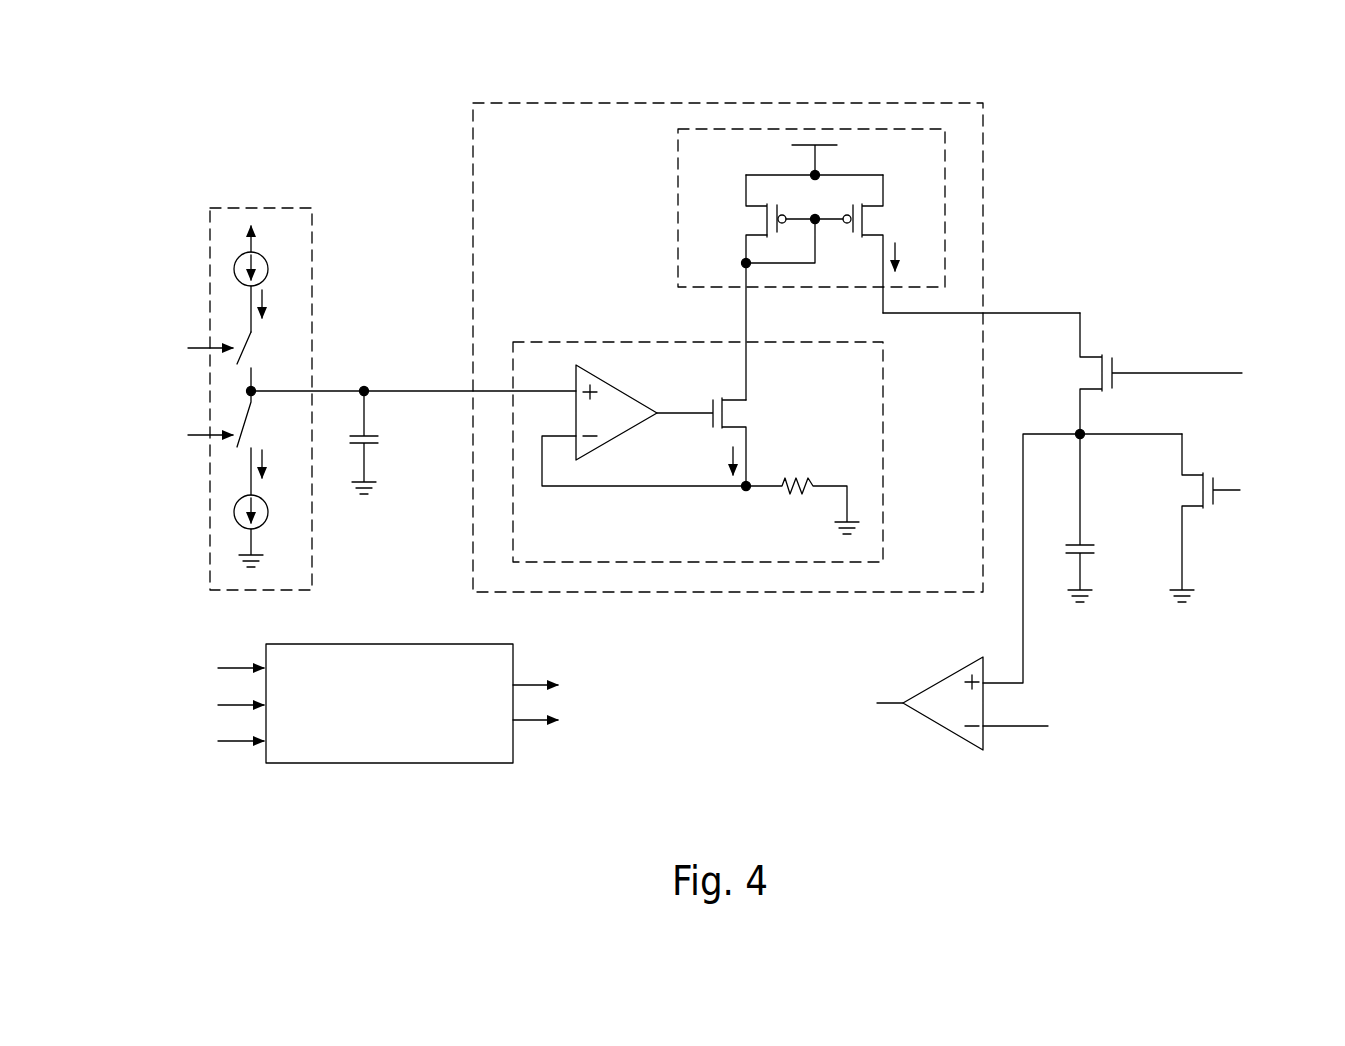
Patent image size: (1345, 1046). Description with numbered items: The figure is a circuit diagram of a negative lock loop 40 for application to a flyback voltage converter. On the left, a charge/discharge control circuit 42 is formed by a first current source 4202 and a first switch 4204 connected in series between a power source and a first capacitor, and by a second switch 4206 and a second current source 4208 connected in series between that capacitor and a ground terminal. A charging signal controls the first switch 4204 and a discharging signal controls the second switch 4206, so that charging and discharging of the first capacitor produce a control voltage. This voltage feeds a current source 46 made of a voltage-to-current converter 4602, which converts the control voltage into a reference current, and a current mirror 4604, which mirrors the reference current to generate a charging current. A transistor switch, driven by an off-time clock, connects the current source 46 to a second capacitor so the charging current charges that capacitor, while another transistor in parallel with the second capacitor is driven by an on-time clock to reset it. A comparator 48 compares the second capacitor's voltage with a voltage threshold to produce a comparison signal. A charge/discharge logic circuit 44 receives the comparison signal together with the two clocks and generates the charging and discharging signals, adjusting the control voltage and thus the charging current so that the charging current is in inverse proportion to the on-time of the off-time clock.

The negative lock loop 40 is at (1152, 96).
The charge/discharge control circuit 42 is at (256, 207).
The current source 4202 is at (268, 268).
The switch 4204 is at (238, 336).
The switch 4206 is at (235, 458).
The current source 4208 is at (268, 512).
The charge/discharge logic circuit 44 is at (388, 644).
The current source 46 is at (983, 218).
The voltage-to-current converter 4602 is at (580, 342).
The current mirror 4604 is at (678, 214).
The comparator 48 is at (948, 678).